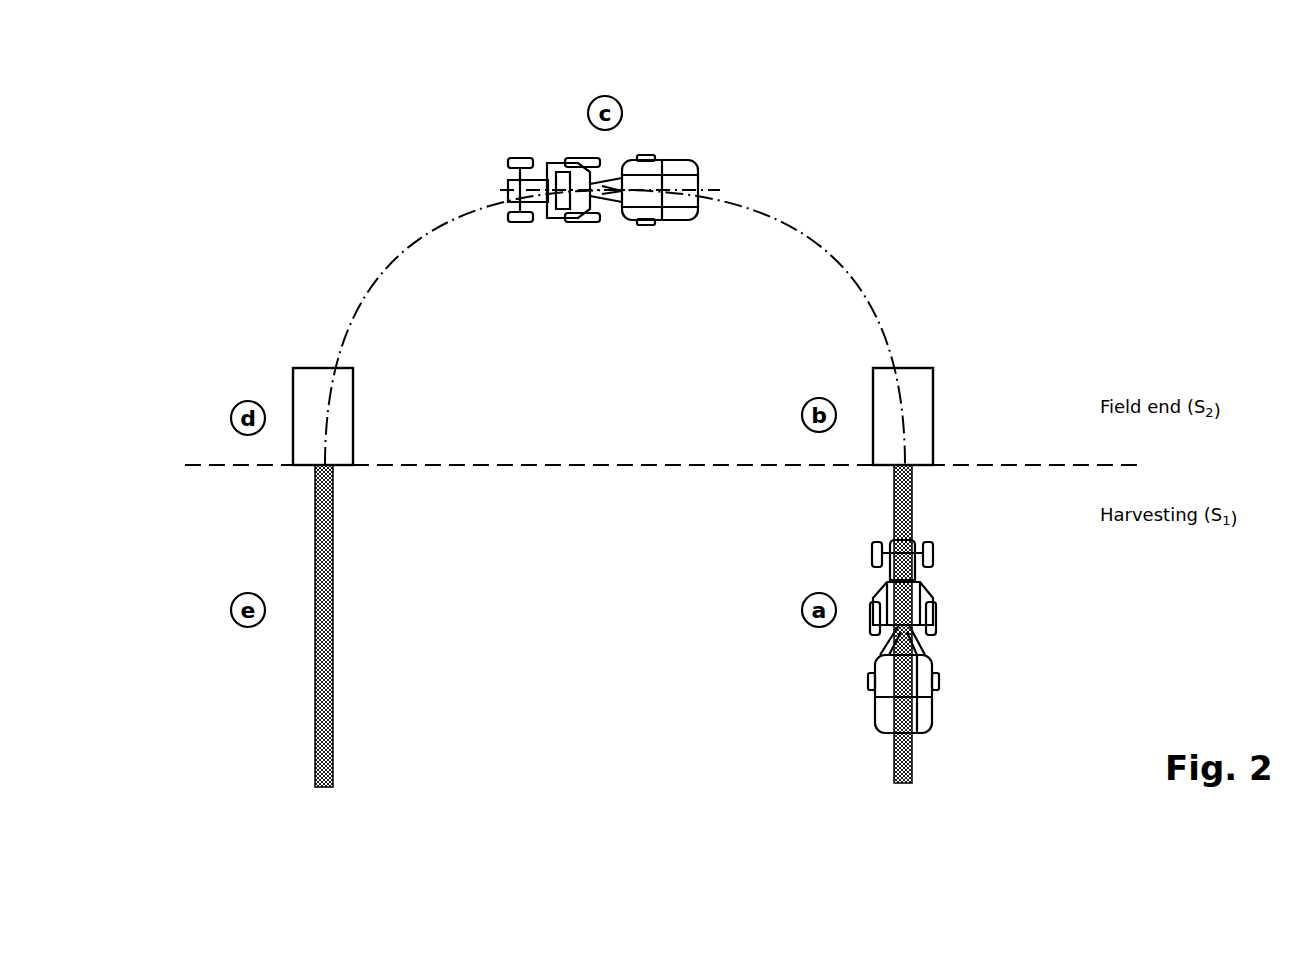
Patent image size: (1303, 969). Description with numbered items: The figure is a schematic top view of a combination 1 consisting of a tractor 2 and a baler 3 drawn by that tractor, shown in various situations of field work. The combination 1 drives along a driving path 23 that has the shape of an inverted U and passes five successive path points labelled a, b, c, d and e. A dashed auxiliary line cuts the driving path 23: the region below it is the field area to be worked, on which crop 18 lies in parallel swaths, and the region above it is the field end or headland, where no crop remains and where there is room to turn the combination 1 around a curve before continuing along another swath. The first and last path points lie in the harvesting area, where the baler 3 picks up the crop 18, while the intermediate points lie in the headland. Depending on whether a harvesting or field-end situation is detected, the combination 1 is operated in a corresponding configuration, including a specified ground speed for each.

The combination 1 is at (540, 150).
The tractor 2 is at (947, 602).
The baler 3 is at (947, 700).
The crop 18 is at (315, 708).
The driving path 23 is at (850, 270).